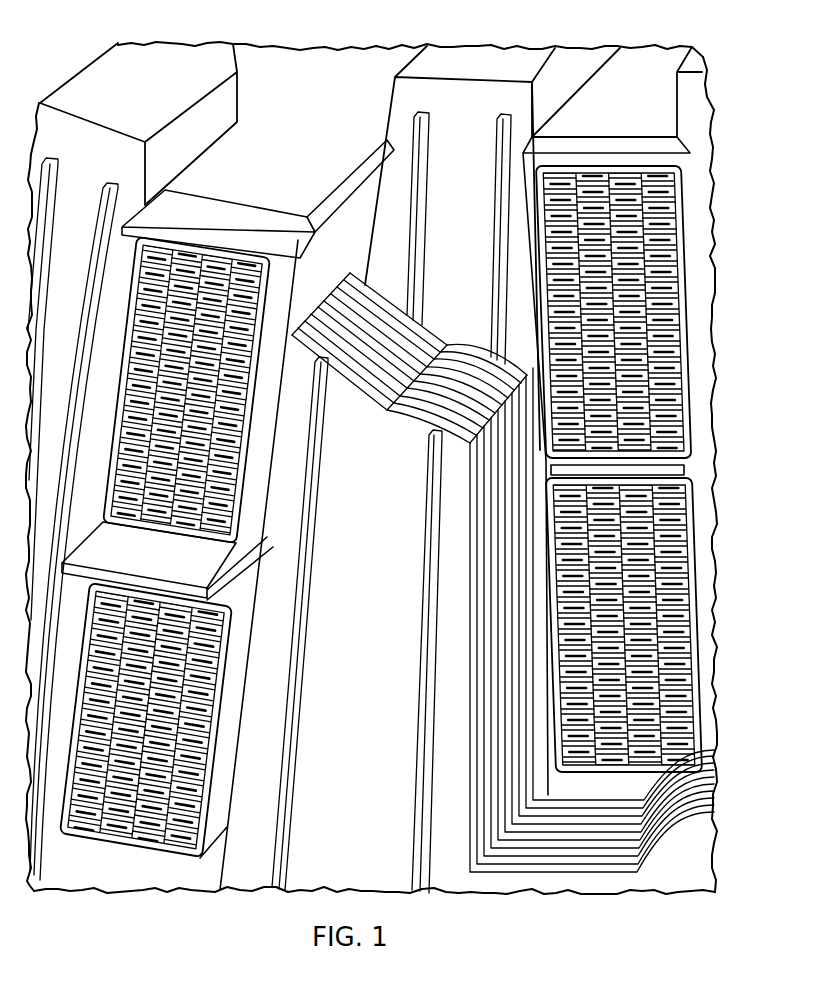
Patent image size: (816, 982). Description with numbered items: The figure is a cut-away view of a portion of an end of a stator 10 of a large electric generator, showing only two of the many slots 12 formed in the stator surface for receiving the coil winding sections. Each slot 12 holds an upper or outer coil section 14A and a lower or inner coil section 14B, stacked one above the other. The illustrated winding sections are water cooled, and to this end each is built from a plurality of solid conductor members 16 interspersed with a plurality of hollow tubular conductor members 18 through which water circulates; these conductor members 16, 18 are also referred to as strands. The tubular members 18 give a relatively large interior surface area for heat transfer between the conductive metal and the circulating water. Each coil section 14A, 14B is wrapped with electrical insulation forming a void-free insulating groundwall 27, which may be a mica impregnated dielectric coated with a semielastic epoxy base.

The stator 10 is at (471, 41).
The slot 12 is at (248, 58).
The upper or outer coil section 14A is at (134, 311).
The lower or inner coil section 14B is at (86, 670).
The solid conductor member 16 is at (133, 372).
The hollow tubular conductor member 18 is at (133, 408).
The insulating groundwall 27 is at (134, 270).